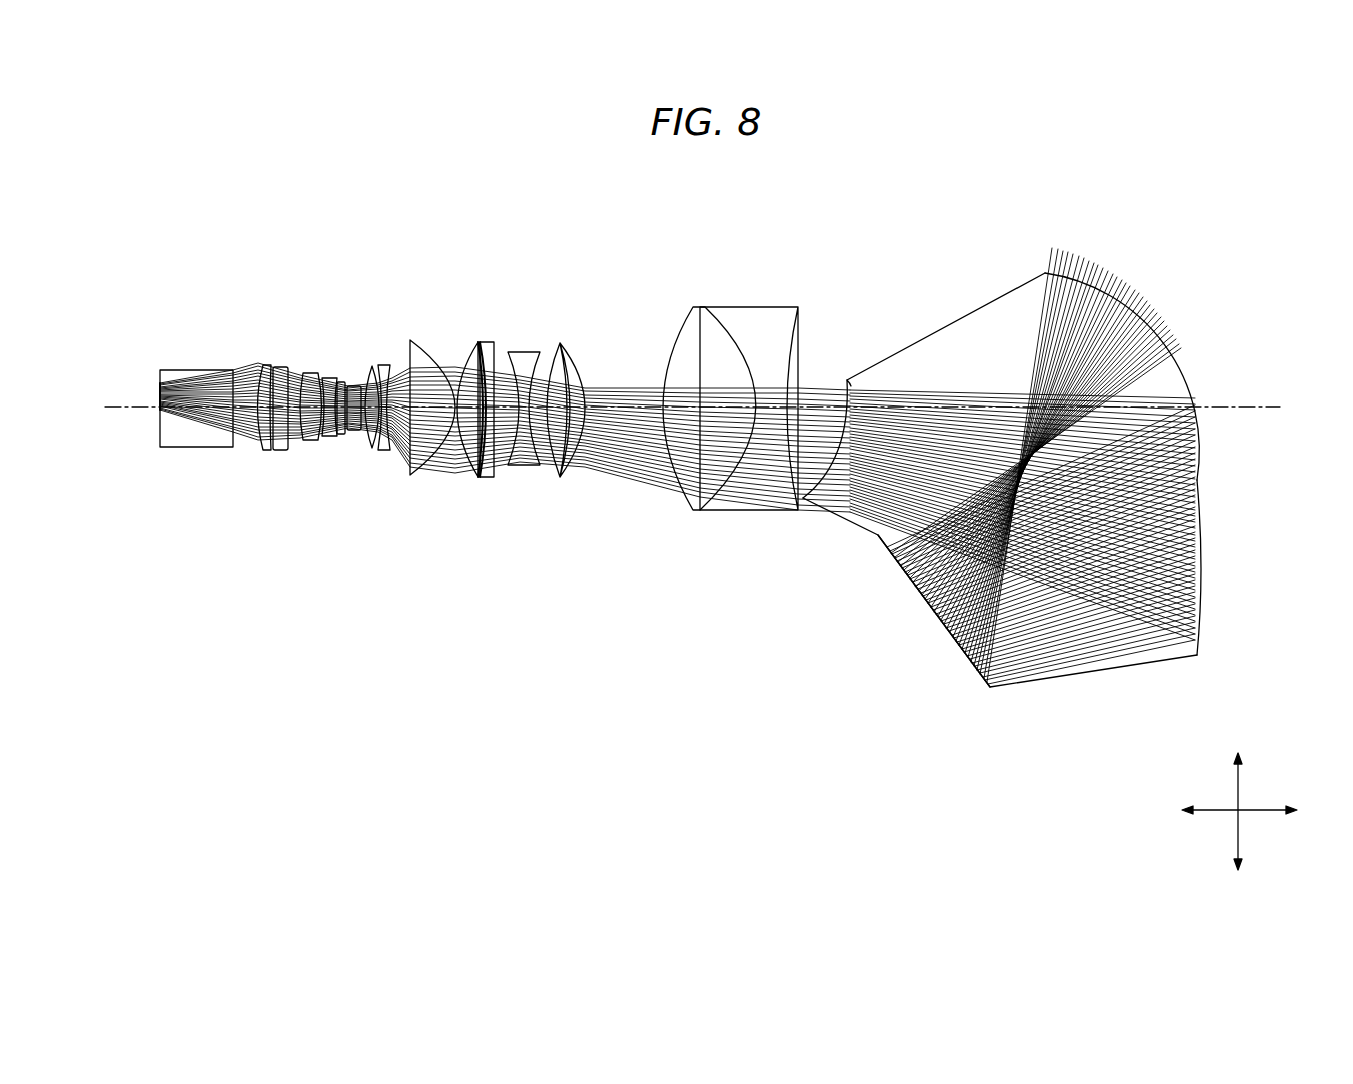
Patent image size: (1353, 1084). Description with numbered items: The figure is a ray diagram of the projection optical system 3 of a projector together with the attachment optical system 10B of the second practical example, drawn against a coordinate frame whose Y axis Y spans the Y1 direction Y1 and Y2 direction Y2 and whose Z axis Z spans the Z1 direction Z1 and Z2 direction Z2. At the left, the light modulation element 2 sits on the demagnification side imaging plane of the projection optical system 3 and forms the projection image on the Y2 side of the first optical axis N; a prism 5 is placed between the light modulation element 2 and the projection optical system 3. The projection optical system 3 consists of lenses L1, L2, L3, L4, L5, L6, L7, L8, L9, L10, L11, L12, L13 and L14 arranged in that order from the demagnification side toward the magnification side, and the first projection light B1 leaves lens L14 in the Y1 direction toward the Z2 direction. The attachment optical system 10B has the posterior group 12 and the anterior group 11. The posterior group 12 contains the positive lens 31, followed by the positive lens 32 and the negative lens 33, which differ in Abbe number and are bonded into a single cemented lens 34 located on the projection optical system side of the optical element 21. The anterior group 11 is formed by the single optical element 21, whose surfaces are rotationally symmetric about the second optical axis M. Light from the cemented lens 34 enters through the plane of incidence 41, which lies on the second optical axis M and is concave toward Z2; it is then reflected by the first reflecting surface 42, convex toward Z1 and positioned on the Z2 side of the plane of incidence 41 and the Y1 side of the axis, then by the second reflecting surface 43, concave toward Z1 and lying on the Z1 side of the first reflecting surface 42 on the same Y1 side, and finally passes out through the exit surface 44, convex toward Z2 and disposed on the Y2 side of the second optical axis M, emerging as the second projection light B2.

The first optical axis N is at (110, 407).
The light modulation element 2 is at (155, 383).
The prism 5 is at (190, 450).
The projection optical system 3 is at (408, 461).
The lens L1 is at (264, 452).
The lens L2 is at (280, 452).
The lens L3 is at (303, 442).
The lens L4 is at (325, 440).
The lens L5 is at (335, 387).
The lens L6 is at (347, 393).
The lens L7 is at (370, 368).
The lens L8 is at (384, 452).
The lens L9 is at (413, 342).
The lens L10 is at (460, 360).
The lens L11 is at (482, 478).
The lens L12 is at (487, 342).
The lens L13 is at (522, 352).
The lens L14 is at (562, 343).
The first projection light B1 is at (552, 472).
The second projection light B2 is at (1038, 270).
The attachment optical system 10B is at (625, 190).
The posterior group 12 is at (698, 228).
The positive lens 31 is at (600, 307).
The cemented lens 34 is at (722, 262).
The positive lens 32 is at (672, 310).
The negative lens 33 is at (735, 307).
The anterior group 11 is at (1004, 451).
The optical element 21 is at (1004, 451).
The plane of incidence 41 is at (845, 383).
The first reflecting surface 42 is at (1192, 610).
The second reflecting surface 43 is at (920, 590).
The exit surface 44 is at (1190, 372).
The second optical axis M is at (1280, 407).
The Y axis Y is at (1240, 832).
The Z axis Z is at (1258, 810).
The Y1 direction Y1 is at (1239, 879).
The Y2 direction Y2 is at (1239, 796).
The Z1 direction Z1 is at (1219, 810).
The Z2 direction Z2 is at (1310, 810).